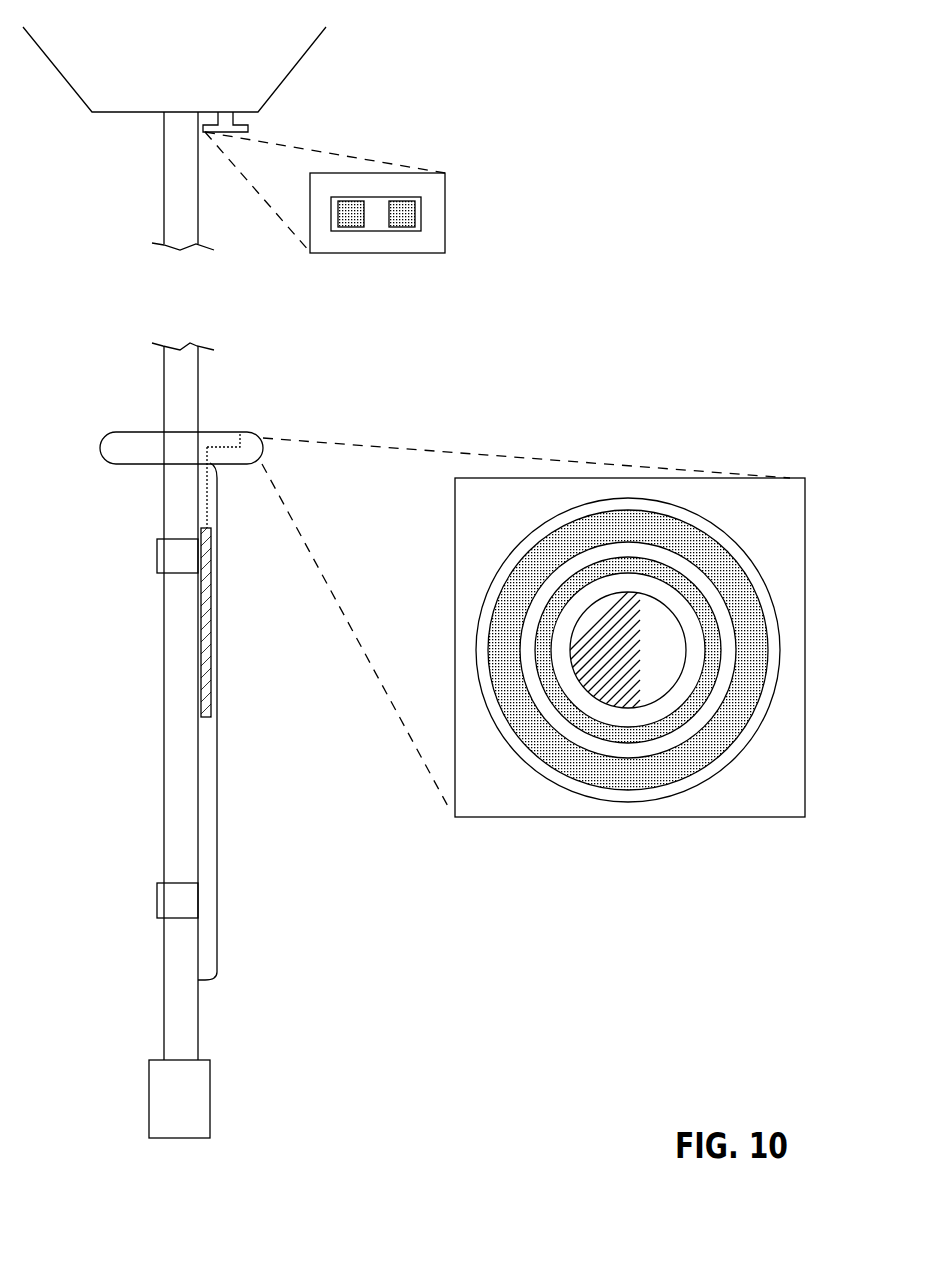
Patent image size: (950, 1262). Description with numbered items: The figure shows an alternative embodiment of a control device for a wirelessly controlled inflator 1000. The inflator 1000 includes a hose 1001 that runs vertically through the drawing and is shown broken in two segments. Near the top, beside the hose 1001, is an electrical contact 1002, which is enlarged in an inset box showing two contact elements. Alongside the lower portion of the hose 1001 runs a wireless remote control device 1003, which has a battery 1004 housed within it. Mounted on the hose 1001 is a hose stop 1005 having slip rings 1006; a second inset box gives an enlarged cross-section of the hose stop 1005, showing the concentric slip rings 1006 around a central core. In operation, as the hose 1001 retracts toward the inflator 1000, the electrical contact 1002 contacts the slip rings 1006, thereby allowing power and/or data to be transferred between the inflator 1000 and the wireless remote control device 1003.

The inflator 1000 is at (714, 119).
The hose 1001 is at (162, 365).
The electrical contact 1002 is at (393, 232).
The wireless remote control device 1003 is at (217, 885).
The battery 1004 is at (203, 717).
The hose stop 1005 is at (168, 460).
The slip rings 1006 is at (550, 600).